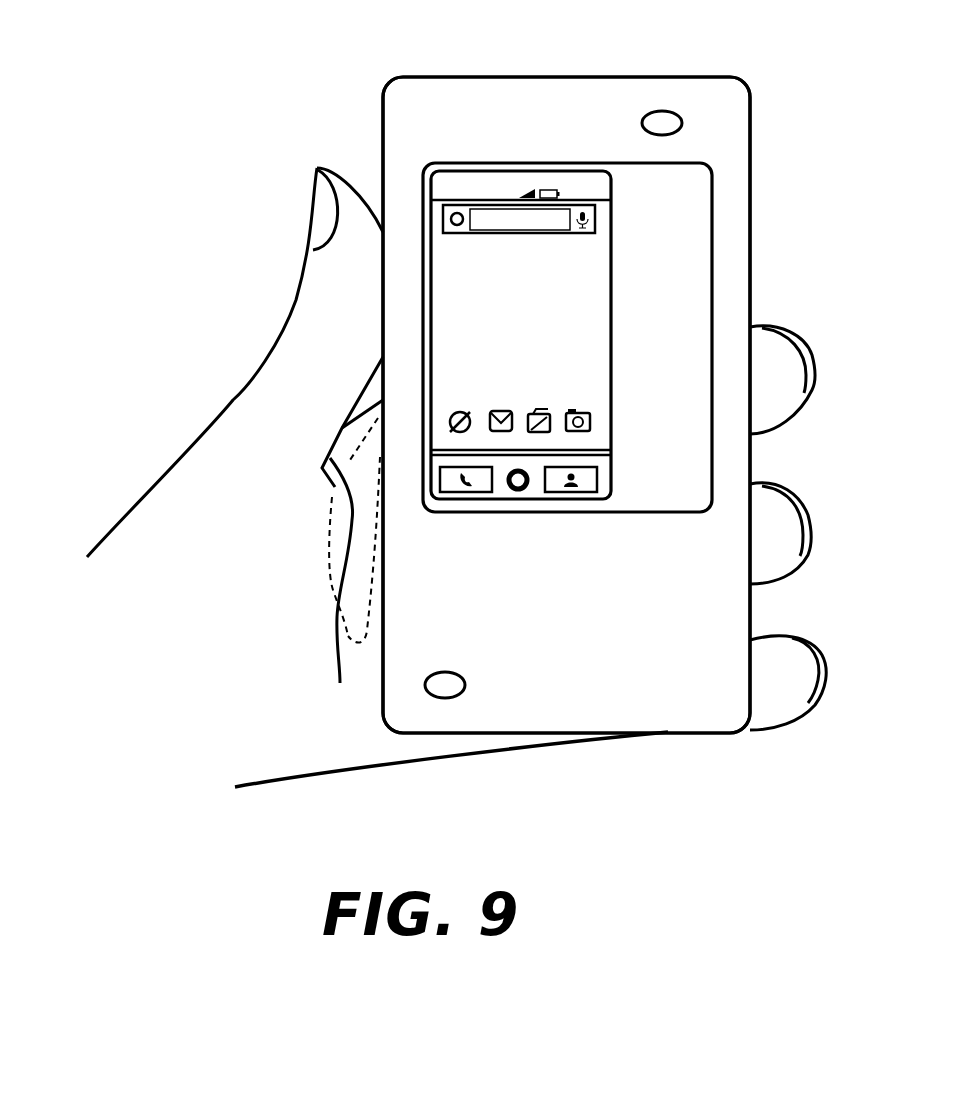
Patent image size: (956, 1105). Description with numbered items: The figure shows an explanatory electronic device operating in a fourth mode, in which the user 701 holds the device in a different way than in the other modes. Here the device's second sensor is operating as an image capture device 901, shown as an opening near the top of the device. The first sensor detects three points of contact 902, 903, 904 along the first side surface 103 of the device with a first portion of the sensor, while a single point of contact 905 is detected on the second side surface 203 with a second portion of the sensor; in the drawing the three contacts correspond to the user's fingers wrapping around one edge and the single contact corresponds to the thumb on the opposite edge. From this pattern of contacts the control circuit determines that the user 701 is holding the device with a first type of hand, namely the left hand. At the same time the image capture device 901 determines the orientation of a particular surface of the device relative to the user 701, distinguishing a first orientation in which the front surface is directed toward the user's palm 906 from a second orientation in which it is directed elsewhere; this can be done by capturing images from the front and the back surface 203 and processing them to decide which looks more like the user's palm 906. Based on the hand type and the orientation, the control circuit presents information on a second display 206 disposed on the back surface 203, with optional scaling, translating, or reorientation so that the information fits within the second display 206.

The first side surface 103 is at (763, 152).
The second side surface (back surface) 203 is at (371, 130).
The second display 206 is at (627, 513).
The user 701 is at (192, 498).
The image capture device 901 is at (653, 112).
The point of contact 902 is at (754, 380).
The point of contact 903 is at (754, 537).
The point of contact 904 is at (754, 688).
The point of contact 905 is at (379, 276).
The user's palm 906 is at (343, 740).